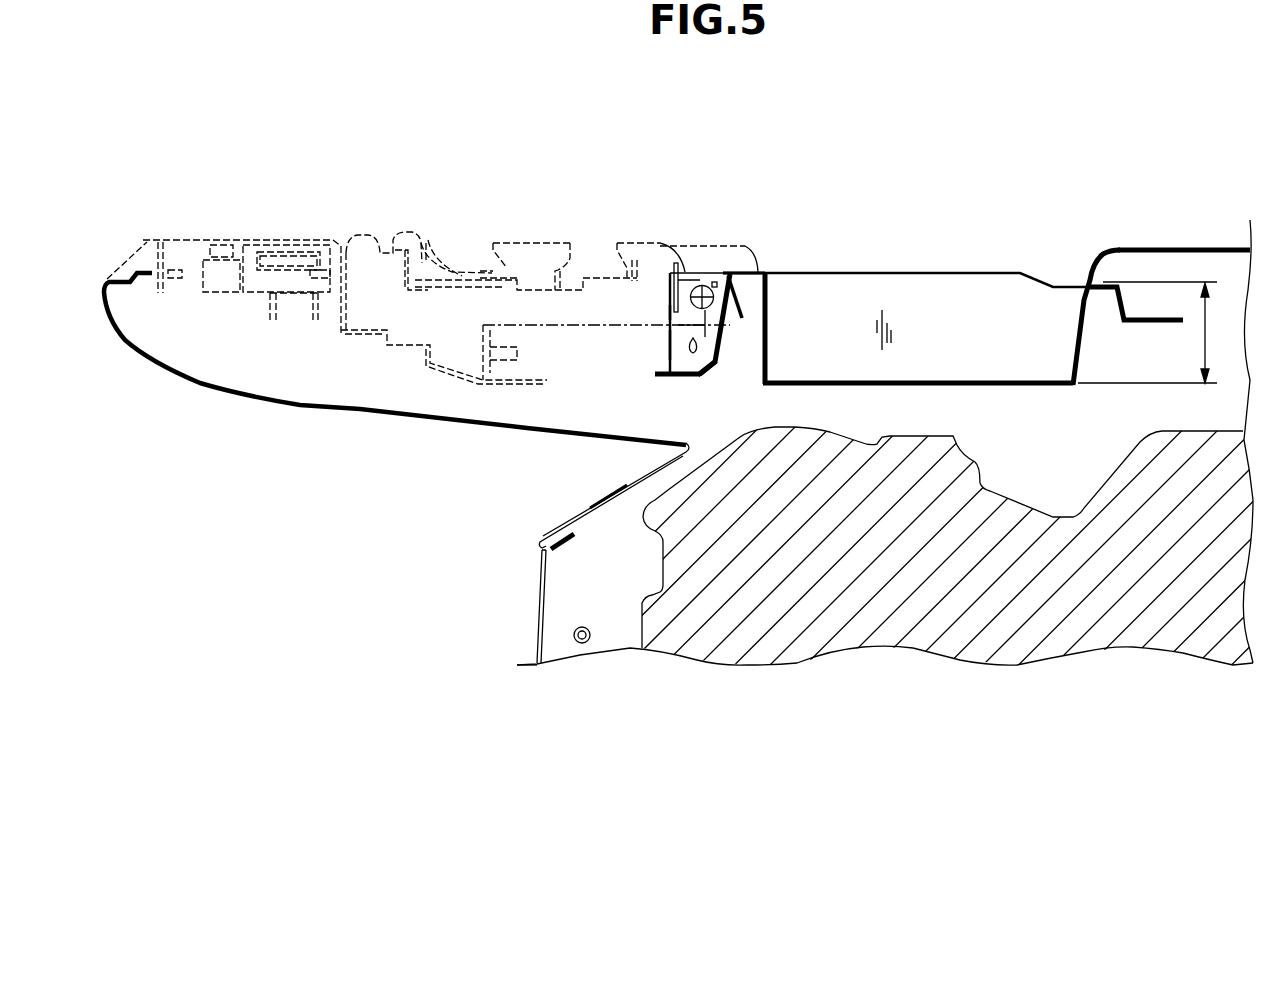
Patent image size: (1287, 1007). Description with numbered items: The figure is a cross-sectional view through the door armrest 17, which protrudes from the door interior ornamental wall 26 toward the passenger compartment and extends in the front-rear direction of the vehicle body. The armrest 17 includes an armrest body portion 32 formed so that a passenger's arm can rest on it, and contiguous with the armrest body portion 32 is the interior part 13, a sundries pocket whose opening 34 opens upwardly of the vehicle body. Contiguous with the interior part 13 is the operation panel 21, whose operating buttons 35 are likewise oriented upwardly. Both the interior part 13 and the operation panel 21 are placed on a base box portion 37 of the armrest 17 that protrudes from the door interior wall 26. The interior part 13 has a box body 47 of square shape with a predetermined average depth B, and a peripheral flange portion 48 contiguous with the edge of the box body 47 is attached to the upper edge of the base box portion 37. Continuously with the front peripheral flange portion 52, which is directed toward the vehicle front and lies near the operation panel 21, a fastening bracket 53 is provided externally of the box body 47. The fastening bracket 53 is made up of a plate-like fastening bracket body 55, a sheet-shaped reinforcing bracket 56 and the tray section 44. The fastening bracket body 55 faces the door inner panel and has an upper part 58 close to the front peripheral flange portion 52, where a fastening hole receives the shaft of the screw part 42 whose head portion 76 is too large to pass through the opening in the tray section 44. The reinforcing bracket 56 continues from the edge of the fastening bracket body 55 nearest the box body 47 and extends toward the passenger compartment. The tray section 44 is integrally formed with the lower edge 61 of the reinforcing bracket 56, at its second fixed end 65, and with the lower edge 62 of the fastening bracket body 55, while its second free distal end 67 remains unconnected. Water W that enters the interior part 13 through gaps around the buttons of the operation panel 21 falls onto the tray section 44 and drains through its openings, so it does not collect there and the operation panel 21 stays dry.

The interior part 13 is at (890, 407).
The armrest 17 is at (1169, 202).
The operation panel 21 is at (415, 200).
The door interior ornamental wall 26 is at (555, 530).
The armrest body portion 32 is at (1198, 248).
The opening 34 is at (1082, 295).
The operating buttons 35 is at (513, 240).
The base box portion 37 is at (427, 420).
The screw part 42 is at (733, 231).
The tray section 44 is at (658, 372).
The box body 47 is at (933, 380).
The peripheral flange portion 48 is at (1108, 290).
The front peripheral flange portion 52 is at (750, 246).
The fastening bracket 53 is at (660, 310).
The fastening bracket body 55 is at (668, 338).
The reinforcing bracket 56 is at (750, 278).
The upper part 58 is at (615, 320).
The lower edge 61 is at (727, 325).
The lower edge 62 is at (681, 366).
The second fixed end 65 is at (714, 433).
The second free distal end 67 is at (667, 350).
The head portion 76 is at (706, 285).
The water W is at (686, 342).
The average depth B is at (1149, 332).